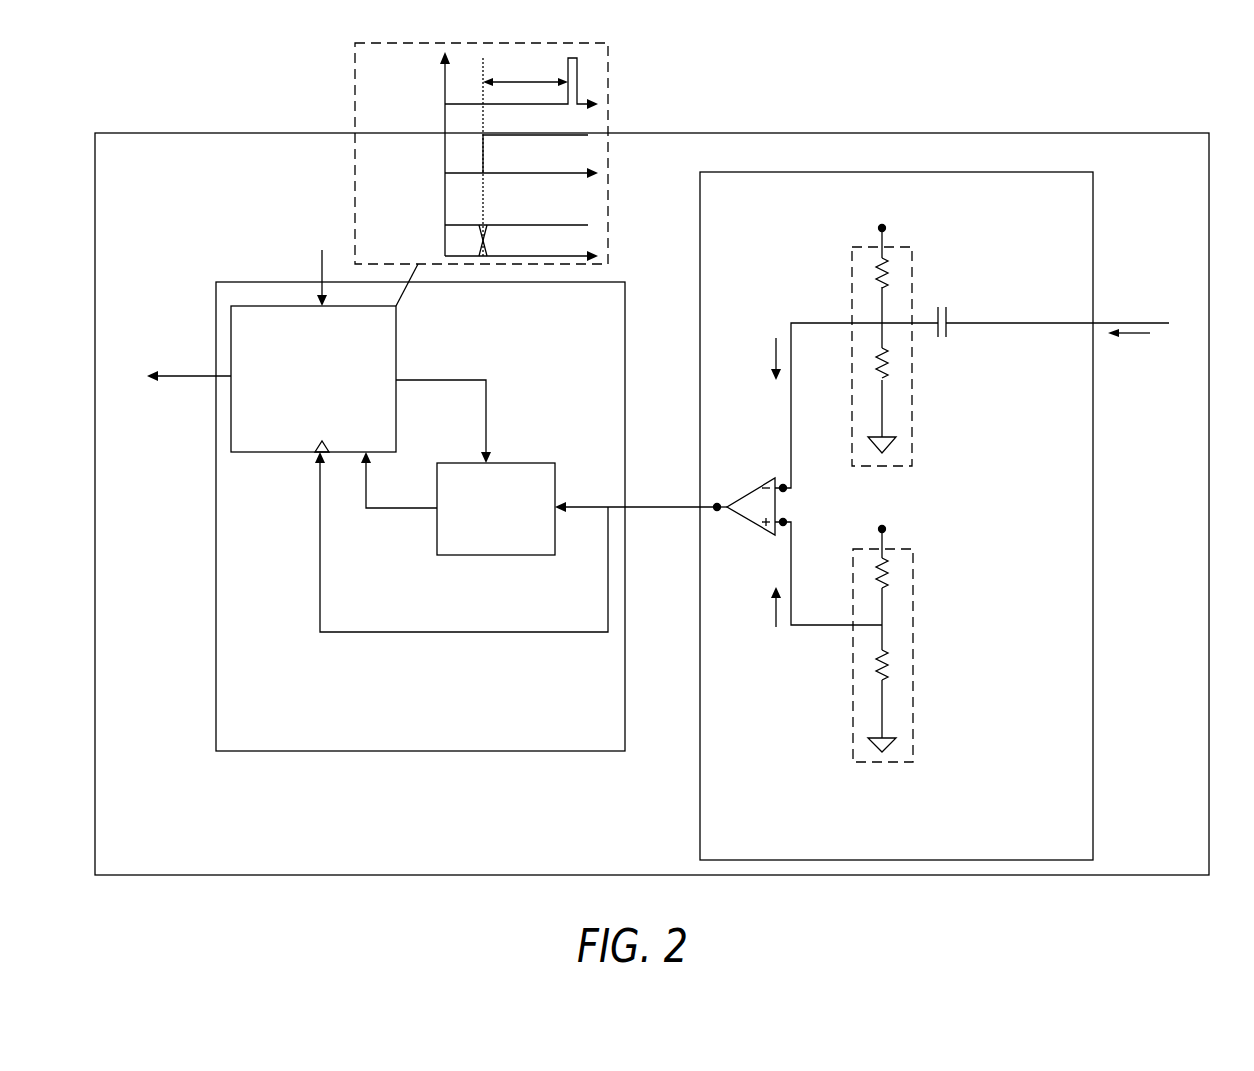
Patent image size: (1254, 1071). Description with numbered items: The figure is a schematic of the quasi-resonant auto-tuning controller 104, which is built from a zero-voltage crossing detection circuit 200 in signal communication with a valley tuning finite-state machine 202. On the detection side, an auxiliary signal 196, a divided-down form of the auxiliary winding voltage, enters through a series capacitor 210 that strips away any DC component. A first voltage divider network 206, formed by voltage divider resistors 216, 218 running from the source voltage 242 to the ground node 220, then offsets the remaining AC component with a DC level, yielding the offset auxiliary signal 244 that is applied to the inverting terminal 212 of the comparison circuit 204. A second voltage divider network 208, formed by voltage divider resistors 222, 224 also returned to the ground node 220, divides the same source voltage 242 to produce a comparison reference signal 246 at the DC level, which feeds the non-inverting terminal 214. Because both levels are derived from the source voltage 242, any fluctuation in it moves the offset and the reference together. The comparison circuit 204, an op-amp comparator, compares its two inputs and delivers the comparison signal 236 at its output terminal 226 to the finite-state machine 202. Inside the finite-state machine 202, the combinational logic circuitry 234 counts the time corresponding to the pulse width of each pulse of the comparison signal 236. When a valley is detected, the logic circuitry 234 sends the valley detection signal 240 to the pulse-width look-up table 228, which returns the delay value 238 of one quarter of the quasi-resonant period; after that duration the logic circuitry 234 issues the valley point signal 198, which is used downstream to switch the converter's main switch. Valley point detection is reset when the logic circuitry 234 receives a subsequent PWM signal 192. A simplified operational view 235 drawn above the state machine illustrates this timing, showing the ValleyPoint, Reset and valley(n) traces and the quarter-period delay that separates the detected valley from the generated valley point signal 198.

The quasi-resonant auto-tuning controller 104 is at (652, 504).
The PWM signal 192 is at (318, 268).
The auxiliary signal 196 is at (1136, 338).
The valley point signal 198 is at (208, 374).
The zero-voltage crossing detection circuit 200 is at (896, 516).
The valley tuning finite-state machine 202 is at (420, 516).
The comparison circuit 204 is at (757, 498).
The first voltage divider network 206 is at (913, 440).
The second voltage divider network 208 is at (913, 730).
The series capacitor 210 is at (950, 328).
The inverting terminal 212 is at (781, 485).
The non-inverting terminal 214 is at (782, 527).
The voltage divider resistor 216 is at (870, 266).
The voltage divider resistor 218 is at (870, 368).
The ground node 220 is at (870, 440).
The voltage divider resistor 222 is at (893, 575).
The voltage divider resistor 224 is at (872, 670).
The output terminal 226 is at (718, 512).
The pulse-width look-up table 228 is at (496, 509).
The combinational logic circuitry 234 is at (313, 379).
The operational view 235 is at (610, 114).
The comparison signal 236 is at (680, 497).
The delay value 238 is at (390, 512).
The valley detection signal 240 is at (428, 378).
The source voltage 242 is at (880, 527).
The offset auxiliary signal 244 is at (771, 356).
The comparison reference signal 246 is at (774, 620).